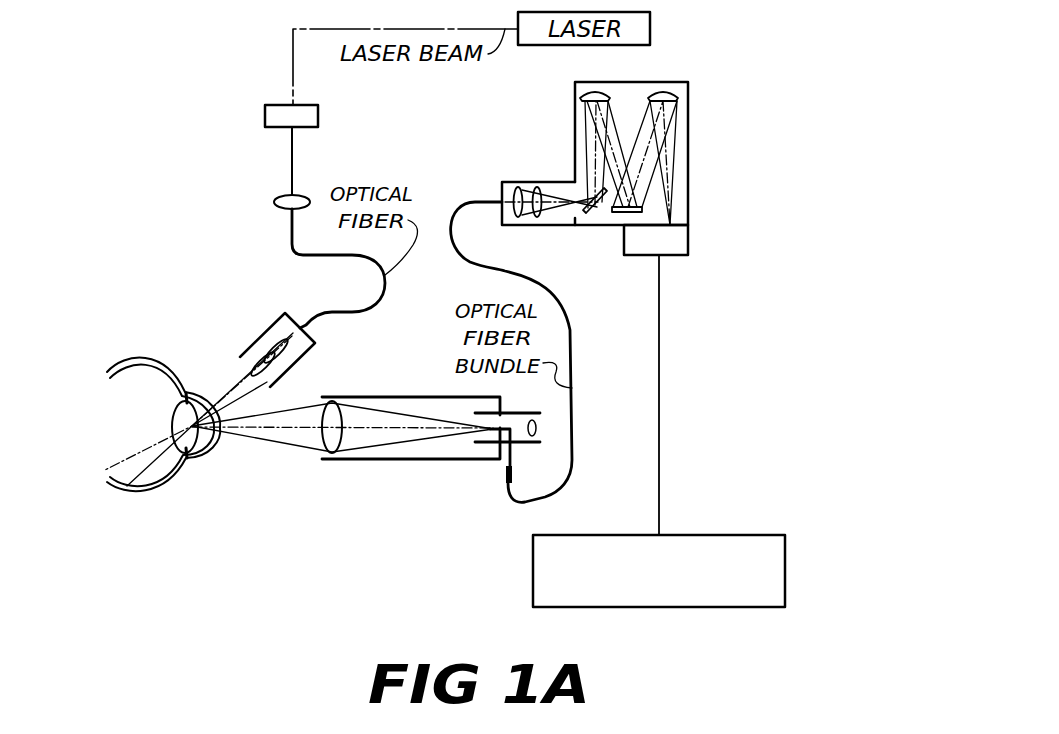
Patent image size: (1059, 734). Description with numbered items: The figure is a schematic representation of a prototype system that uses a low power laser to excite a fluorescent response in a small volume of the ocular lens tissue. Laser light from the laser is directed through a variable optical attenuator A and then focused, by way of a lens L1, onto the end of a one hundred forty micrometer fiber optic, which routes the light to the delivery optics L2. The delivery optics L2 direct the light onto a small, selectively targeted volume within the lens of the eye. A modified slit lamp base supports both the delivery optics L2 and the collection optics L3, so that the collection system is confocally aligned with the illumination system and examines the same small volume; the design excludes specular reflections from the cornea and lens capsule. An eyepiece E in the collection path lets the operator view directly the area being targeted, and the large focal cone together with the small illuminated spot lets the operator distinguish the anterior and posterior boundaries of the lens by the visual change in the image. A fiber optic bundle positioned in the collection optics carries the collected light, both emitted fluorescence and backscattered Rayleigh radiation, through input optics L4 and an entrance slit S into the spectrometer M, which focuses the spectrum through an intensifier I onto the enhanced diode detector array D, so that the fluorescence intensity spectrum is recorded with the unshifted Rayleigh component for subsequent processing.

The variable optical attenuator A is at (281, 105).
The lens L1 is at (287, 195).
The delivery optics L2 is at (265, 340).
The collection optics L3 is at (341, 455).
The lens assembly L4 is at (531, 182).
The monochromator M is at (636, 82).
The spectrometer S is at (572, 225).
The intensifier I is at (689, 238).
The eyepiece E is at (534, 414).
The enhanced diode detector array D is at (708, 535).